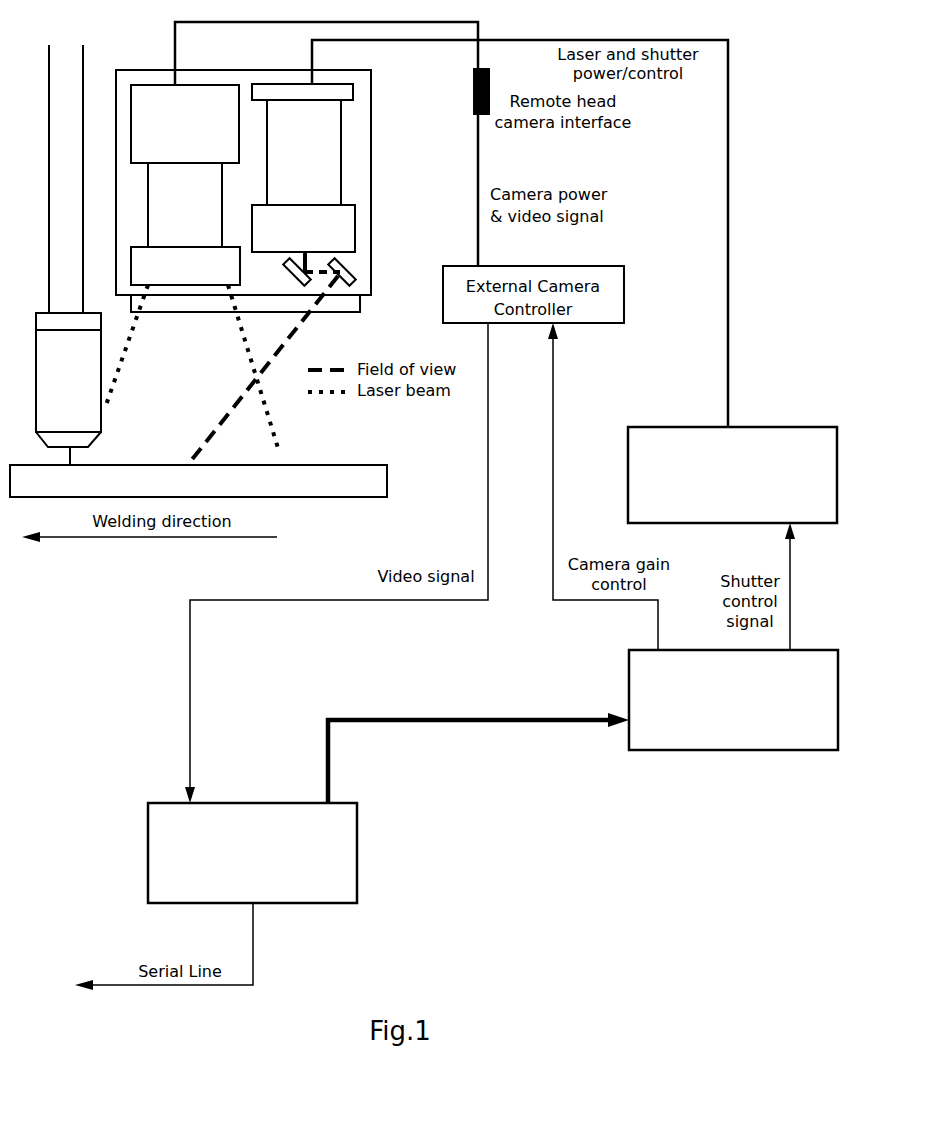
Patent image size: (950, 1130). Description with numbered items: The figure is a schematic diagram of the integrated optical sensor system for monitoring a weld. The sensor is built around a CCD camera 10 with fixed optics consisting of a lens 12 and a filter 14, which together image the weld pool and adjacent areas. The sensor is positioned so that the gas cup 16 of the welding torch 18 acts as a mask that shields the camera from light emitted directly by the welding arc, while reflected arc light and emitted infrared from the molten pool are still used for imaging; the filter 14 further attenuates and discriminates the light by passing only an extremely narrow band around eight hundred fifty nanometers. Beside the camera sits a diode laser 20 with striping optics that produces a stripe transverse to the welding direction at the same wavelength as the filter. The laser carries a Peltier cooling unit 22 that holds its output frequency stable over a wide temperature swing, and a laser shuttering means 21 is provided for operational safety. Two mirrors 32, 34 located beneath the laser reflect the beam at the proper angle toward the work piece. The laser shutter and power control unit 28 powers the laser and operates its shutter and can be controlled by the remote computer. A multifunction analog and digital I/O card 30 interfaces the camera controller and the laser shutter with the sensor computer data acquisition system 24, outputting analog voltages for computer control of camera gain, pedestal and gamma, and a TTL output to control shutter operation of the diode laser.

The CCD camera 10 is at (185, 124).
The lens 12 is at (185, 205).
The filter 14 is at (185, 267).
The gas cup 16 is at (68, 389).
The welding torch 18 is at (66, 179).
The diode laser 20 is at (304, 152).
The laser shuttering means 21 is at (303, 228).
The Peltier cooling unit 22 is at (302, 92).
The computer data acquisition system 24 is at (252, 853).
The laser shutter and power control unit 28 is at (732, 475).
The multifunction analog and digital I/O card 30 is at (733, 700).
The mirror 32 is at (292, 276).
The mirror 34 is at (349, 269).